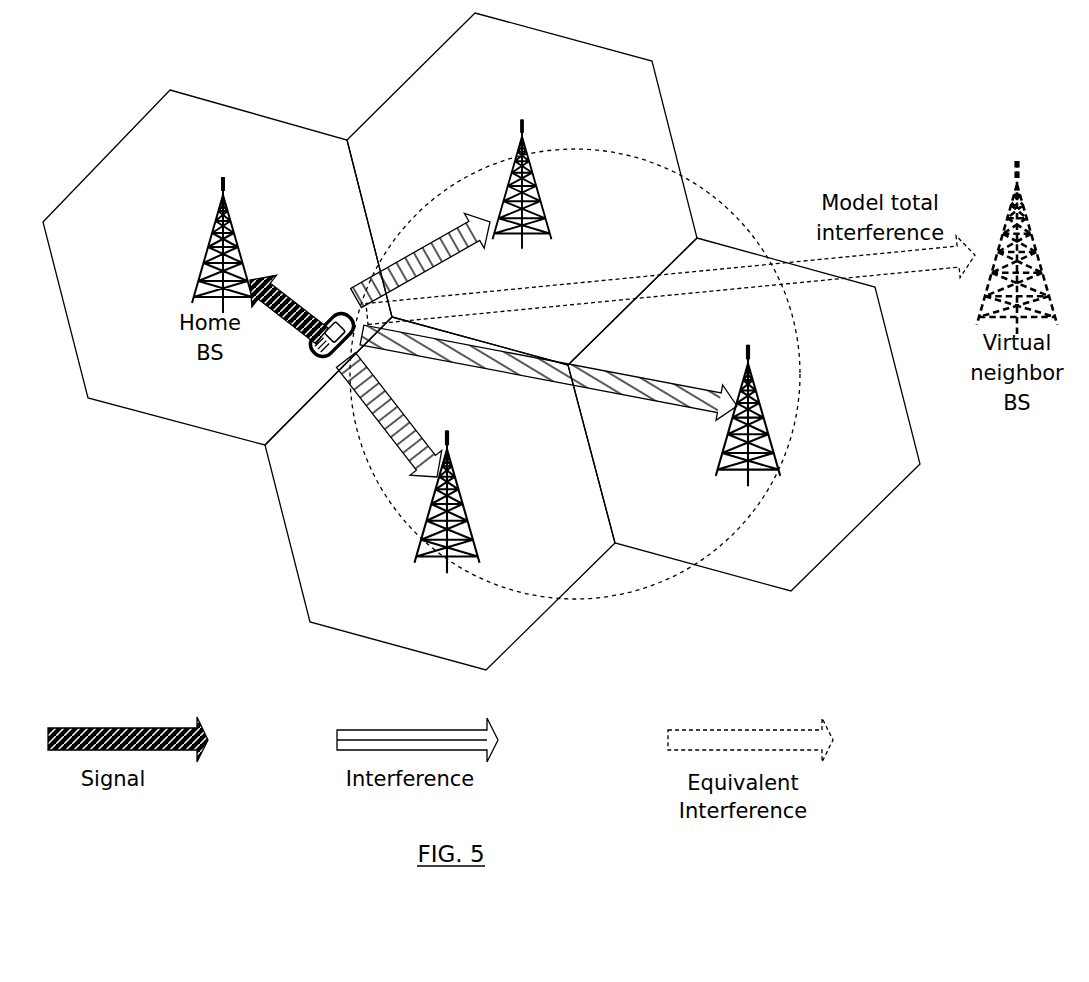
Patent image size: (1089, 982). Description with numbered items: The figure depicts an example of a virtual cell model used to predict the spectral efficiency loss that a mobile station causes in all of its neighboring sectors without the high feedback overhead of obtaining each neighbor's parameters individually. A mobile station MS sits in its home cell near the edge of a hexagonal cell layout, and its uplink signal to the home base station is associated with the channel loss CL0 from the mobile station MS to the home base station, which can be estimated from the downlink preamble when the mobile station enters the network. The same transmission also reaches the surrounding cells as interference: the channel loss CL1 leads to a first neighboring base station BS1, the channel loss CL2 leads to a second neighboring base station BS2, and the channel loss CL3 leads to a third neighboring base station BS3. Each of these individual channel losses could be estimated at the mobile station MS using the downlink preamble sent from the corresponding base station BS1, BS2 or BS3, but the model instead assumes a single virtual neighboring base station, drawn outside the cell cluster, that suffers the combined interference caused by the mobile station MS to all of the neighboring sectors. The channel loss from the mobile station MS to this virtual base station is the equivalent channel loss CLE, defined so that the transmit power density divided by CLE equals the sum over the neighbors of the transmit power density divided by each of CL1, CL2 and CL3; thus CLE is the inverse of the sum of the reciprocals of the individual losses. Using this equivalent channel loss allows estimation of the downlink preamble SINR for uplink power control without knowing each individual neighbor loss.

The channel loss to home base station CL0 is at (289, 309).
The channel loss to first neighboring base station CL1 is at (420, 261).
The channel loss to second neighboring base station CL2 is at (389, 415).
The channel loss to third neighboring base station CL3 is at (548, 377).
The equivalent channel loss to virtual base station CLE is at (670, 286).
The mobile station MS is at (325, 349).
The first neighboring base station BS1 is at (521, 210).
The second neighboring base station BS2 is at (432, 533).
The third neighboring base station BS3 is at (744, 446).